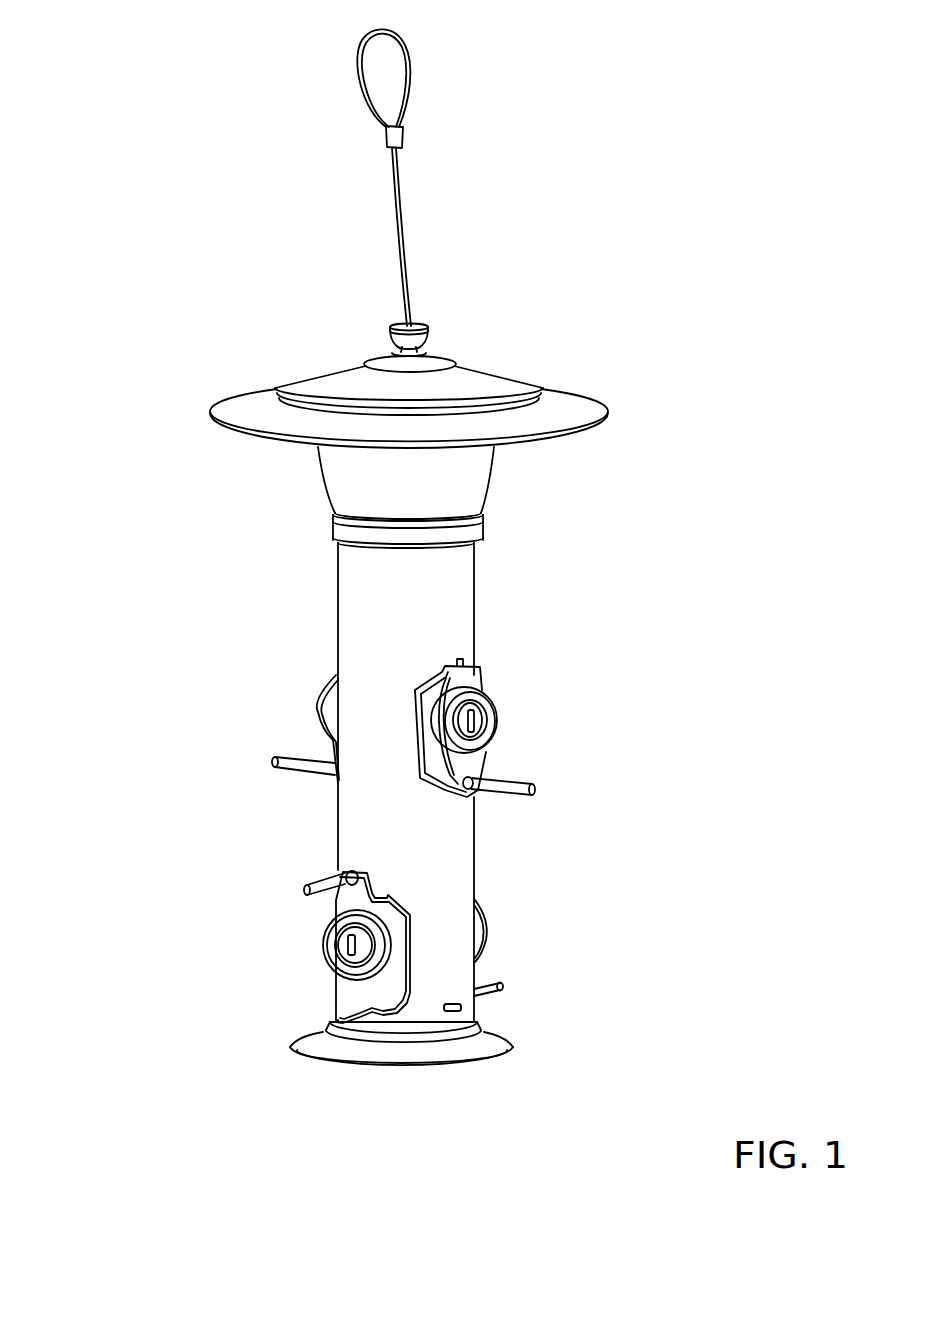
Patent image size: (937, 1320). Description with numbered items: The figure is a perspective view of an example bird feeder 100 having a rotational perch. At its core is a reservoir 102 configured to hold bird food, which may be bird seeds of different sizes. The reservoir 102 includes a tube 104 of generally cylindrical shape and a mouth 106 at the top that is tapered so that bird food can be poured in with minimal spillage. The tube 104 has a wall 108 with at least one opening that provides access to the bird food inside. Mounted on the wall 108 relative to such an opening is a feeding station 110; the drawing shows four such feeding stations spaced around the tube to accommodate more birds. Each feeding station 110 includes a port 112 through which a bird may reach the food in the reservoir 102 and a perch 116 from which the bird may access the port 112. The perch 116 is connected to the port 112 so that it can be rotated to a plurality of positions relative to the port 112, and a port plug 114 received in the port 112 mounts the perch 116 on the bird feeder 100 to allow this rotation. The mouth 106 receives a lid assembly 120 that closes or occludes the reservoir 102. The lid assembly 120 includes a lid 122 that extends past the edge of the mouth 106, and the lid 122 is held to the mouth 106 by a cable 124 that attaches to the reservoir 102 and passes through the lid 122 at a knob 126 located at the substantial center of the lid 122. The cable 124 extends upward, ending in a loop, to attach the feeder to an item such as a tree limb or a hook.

The bird feeder 100 is at (121, 98).
The reservoir 102 is at (201, 535).
The tube 104 is at (509, 639).
The mouth 106 is at (514, 484).
The wall 108 is at (338, 609).
The feeding station 110 is at (307, 857).
The port 112 is at (333, 988).
The port plug 114 is at (340, 938).
The perch 116 is at (327, 890).
The lid assembly 120 is at (530, 207).
The lid 122 is at (326, 364).
The cable 124 is at (407, 222).
The knob 126 is at (393, 329).